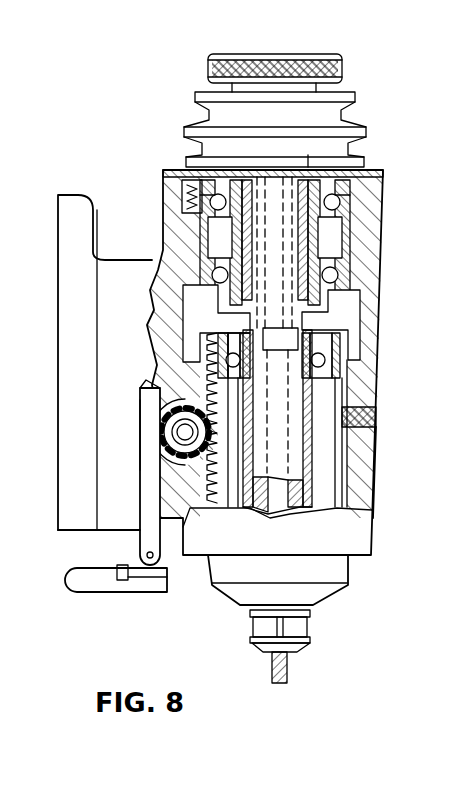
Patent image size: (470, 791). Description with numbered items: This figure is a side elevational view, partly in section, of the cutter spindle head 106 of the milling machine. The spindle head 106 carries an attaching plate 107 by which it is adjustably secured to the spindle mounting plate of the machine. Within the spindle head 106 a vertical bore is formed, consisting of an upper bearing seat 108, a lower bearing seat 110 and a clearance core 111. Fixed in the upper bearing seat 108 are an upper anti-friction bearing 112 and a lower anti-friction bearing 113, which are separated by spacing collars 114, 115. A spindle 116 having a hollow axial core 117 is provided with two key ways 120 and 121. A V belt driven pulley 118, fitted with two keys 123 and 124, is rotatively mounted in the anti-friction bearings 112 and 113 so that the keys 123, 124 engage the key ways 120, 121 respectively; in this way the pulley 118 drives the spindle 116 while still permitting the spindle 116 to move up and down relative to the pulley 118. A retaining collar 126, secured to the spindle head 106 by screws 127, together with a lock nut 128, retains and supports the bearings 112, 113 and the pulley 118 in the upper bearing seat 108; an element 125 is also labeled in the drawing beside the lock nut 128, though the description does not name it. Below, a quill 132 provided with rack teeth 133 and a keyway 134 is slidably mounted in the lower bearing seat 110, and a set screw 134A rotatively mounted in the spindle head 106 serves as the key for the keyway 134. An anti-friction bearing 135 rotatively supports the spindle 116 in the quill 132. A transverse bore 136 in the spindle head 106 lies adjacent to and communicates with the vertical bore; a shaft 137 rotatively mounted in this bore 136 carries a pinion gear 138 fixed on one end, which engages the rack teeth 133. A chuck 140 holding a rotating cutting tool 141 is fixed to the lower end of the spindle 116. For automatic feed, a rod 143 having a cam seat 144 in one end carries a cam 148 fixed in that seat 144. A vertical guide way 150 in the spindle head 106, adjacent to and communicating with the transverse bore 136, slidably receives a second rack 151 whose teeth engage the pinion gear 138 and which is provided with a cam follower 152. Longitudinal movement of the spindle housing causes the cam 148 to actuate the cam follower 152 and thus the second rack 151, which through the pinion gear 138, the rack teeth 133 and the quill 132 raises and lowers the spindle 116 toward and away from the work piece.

The spindle head 106 is at (385, 283).
The attaching plate 107 is at (68, 230).
The upper bearing seat 108 is at (332, 243).
The lower bearing seat 110 is at (371, 466).
The clearance core 111 is at (352, 350).
The upper anti-friction bearing 112 is at (350, 190).
The lower anti-friction bearing 113 is at (362, 300).
The spacing collar 114 is at (340, 228).
The spacing collar 115 is at (338, 263).
The spindle 116 is at (350, 488).
The hollow axial core 117 is at (333, 532).
The V belt driven pulley 118 is at (352, 100).
The key way 120 is at (222, 170).
The key way 121 is at (343, 158).
The key 123 is at (164, 241).
The key 124 is at (346, 194).
The lock nut 125 is at (240, 310).
The retaining collar 126 is at (362, 172).
The screws 127 is at (190, 178).
The lock nut 128 is at (365, 357).
The quill 132 is at (366, 528).
The rack teeth 133 is at (221, 498).
The keyway 134 is at (374, 442).
The set screw 134A is at (377, 418).
The anti-friction bearing 135 is at (364, 380).
The transverse bore 136 is at (207, 450).
The shaft 137 is at (163, 430).
The pinion gear 138 is at (176, 448).
The chuck 140 is at (298, 628).
The rotating cutting tool 141 is at (288, 666).
The rod 143 is at (100, 586).
The cam seat 144 is at (140, 580).
The cam 148 is at (120, 584).
The vertical guide way 150 is at (147, 376).
The second rack 151 is at (137, 413).
The cam follower 152 is at (165, 558).